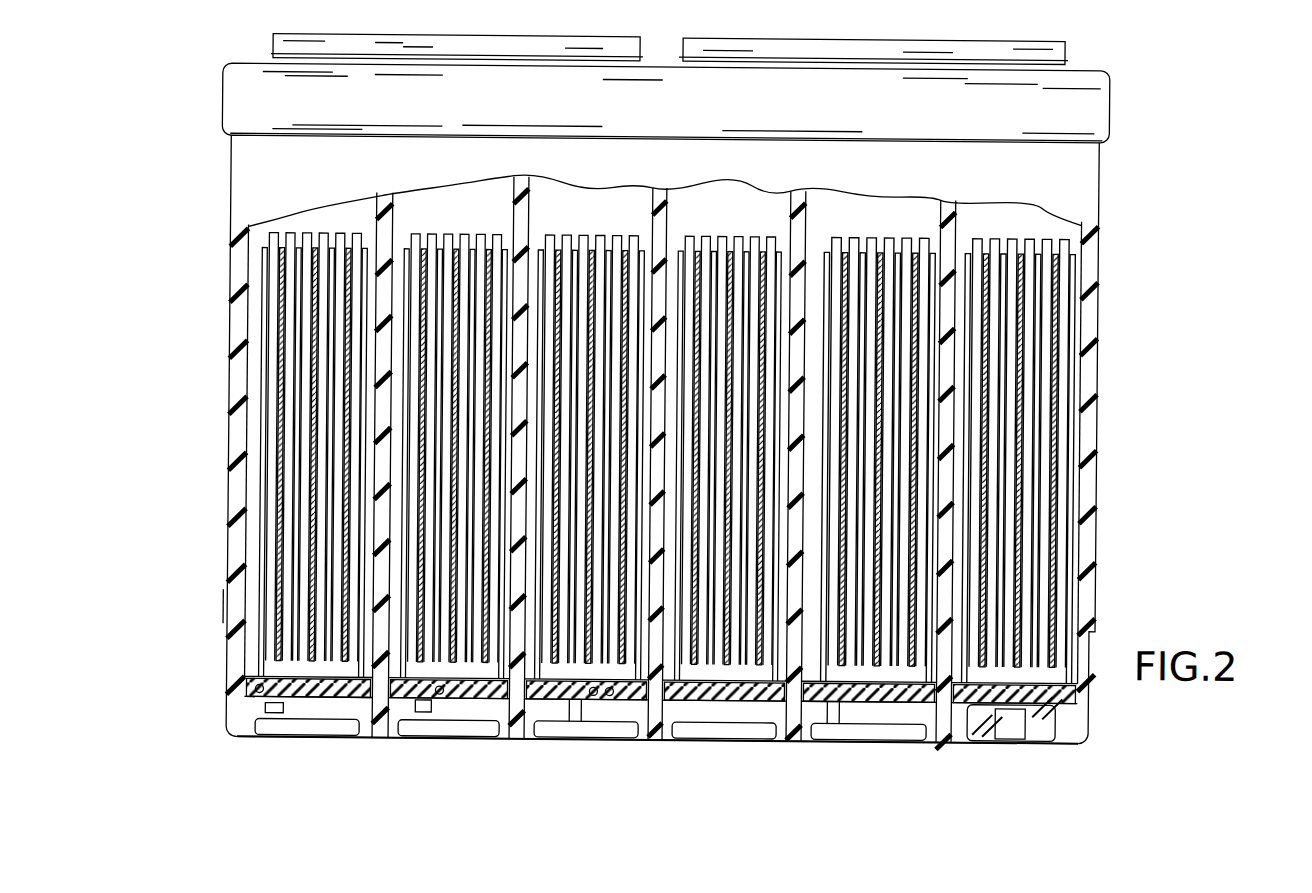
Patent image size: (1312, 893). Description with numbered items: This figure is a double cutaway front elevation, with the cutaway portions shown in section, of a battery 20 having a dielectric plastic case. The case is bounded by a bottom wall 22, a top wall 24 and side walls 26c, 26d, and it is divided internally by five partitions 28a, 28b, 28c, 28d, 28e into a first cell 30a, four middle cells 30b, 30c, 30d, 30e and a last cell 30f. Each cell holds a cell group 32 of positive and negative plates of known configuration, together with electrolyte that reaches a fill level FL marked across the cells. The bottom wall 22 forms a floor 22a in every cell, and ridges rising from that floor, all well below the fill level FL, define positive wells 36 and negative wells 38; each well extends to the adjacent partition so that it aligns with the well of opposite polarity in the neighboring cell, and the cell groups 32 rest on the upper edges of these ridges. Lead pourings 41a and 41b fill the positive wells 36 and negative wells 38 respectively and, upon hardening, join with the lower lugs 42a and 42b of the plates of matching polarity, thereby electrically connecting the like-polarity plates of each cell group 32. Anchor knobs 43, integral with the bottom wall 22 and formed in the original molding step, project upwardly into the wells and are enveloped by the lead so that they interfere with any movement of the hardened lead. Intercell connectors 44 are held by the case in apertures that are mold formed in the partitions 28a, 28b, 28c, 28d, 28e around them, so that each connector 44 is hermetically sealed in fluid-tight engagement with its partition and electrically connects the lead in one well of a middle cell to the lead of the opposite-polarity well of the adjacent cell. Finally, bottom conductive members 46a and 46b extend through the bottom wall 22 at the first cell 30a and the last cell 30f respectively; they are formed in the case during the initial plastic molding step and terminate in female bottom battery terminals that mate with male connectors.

The battery 20 is at (1138, 160).
The bottom wall 22 is at (1092, 562).
The floor 22a is at (232, 683).
The top wall 24 is at (1107, 72).
The side wall 26c is at (229, 383).
The side wall 26d is at (1097, 375).
The partition 28a is at (386, 198).
The partition 28b is at (522, 182).
The partition 28c is at (657, 195).
The partition 28d is at (812, 208).
The partition 28e is at (953, 205).
The first cell 30a is at (310, 446).
The middle cell 30b is at (451, 467).
The middle cell 30c is at (588, 468).
The middle cell 30d is at (726, 469).
The middle cell 30e is at (871, 470).
The last cell 30f is at (1016, 453).
The cell group 32 is at (740, 305).
The positive well 36 is at (507, 764).
The negative well 38 is at (596, 700).
The lead pouring 41a is at (442, 700).
The lead pouring 41b is at (255, 676).
The lower lug 42a is at (426, 684).
The lower lug 42b is at (276, 742).
The anchor knob 43 is at (612, 700).
The intercell connector 44 is at (578, 696).
The bottom conductive member 46a is at (340, 742).
The bottom conductive member 46b is at (1032, 742).
The fill level FL is at (1047, 222).